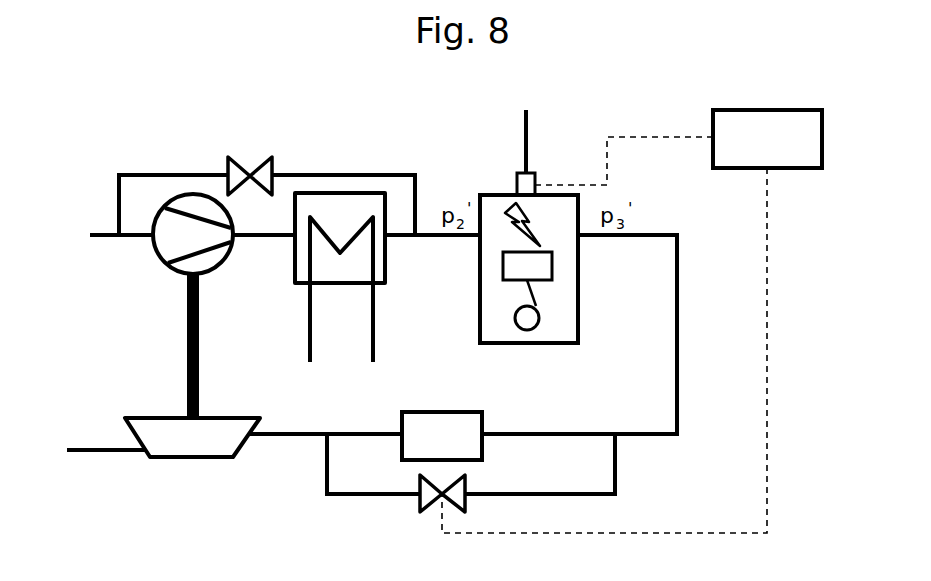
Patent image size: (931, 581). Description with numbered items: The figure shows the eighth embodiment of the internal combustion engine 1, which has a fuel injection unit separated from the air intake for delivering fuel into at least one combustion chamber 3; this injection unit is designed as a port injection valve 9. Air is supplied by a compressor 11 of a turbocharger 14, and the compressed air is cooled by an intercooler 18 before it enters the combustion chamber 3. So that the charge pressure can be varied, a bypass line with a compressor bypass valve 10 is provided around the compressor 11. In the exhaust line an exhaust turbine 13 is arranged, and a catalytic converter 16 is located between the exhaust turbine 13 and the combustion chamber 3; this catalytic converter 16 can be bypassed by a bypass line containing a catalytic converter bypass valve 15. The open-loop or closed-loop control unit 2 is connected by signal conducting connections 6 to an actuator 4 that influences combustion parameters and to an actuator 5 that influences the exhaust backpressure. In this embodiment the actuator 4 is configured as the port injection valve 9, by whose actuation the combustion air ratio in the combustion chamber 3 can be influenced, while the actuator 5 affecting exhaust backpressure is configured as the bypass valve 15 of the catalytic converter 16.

The internal combustion engine 1 is at (90, 100).
The open-loop or closed-loop control unit 2 is at (767, 139).
The combustion chamber 3 is at (563, 308).
The actuator that influences combustion parameters 4 is at (517, 143).
The actuator that influences exhaust backpressure 5 is at (405, 513).
The signal conducting connection 6 is at (657, 136).
The port injection valve 9 is at (515, 181).
The compressor bypass valve 10 is at (232, 160).
The compressor 11 is at (160, 256).
The exhaust turbine 13 is at (130, 418).
The turbocharger 14 is at (165, 350).
The catalytic converter bypass valve 15 is at (425, 512).
The catalytic converter 16 is at (432, 430).
The intercooler 18 is at (300, 278).